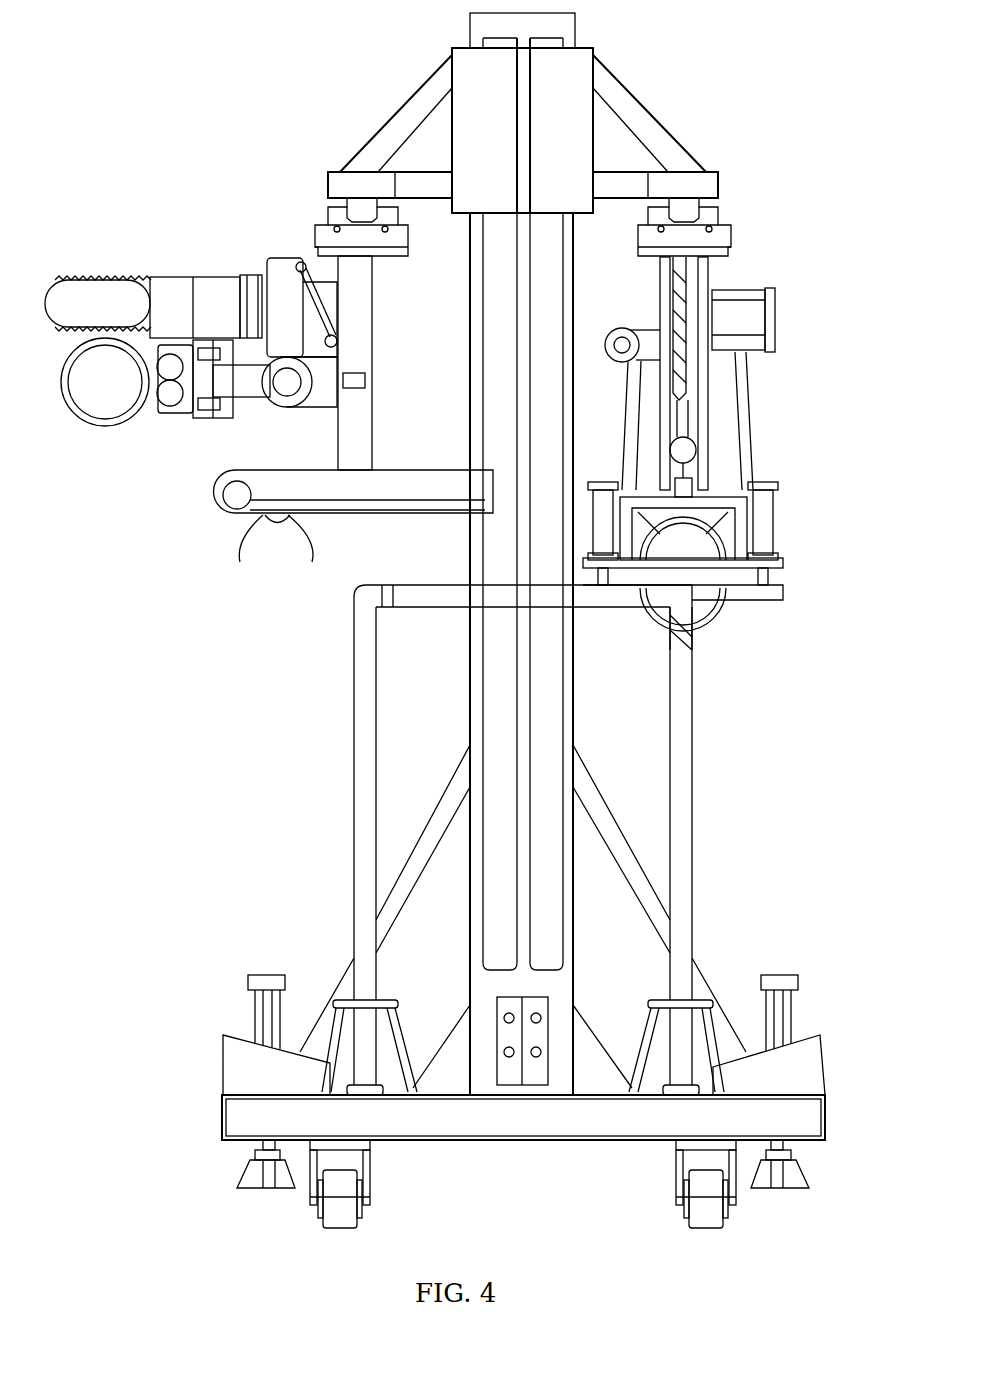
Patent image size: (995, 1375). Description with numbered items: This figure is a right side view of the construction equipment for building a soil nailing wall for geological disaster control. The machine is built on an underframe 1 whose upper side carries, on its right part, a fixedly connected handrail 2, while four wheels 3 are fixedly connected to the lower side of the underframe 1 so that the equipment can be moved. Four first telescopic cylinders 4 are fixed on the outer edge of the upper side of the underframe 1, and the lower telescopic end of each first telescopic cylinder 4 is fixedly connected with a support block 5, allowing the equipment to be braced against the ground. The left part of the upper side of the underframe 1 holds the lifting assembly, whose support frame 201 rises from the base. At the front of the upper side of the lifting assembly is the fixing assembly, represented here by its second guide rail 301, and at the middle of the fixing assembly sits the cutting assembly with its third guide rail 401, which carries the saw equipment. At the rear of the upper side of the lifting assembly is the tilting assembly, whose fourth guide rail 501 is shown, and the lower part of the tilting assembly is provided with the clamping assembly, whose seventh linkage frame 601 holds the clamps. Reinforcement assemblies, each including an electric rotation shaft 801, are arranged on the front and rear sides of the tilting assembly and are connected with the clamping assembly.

The underframe 1 is at (548, 1117).
The handrail 2 is at (370, 792).
The support frame 201 is at (455, 815).
The wheels 3 is at (712, 1222).
The first telescopic cylinder 4 is at (793, 1013).
The support block 5 is at (797, 1187).
The second guide rail 301 is at (363, 197).
The third guide rail 401 is at (260, 270).
The fourth guide rail 501 is at (690, 205).
The seventh linkage frame 601 is at (708, 505).
The electric rotation shaft 801 is at (235, 497).